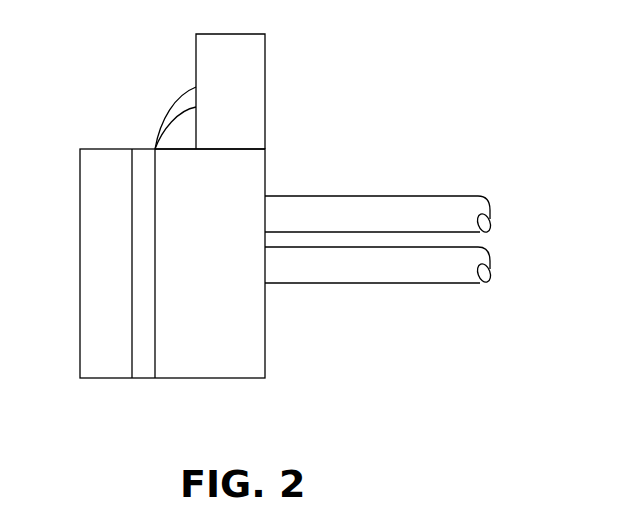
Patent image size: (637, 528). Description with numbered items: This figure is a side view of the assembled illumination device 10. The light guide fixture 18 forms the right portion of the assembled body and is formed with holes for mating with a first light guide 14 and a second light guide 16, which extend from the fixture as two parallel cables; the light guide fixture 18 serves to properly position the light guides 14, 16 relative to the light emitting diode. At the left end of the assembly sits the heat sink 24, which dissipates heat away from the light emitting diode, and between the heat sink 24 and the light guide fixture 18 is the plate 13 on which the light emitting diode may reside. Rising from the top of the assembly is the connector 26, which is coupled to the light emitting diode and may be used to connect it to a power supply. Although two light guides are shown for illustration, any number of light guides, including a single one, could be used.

The illumination device 10 is at (358, 142).
The plate 13 is at (140, 378).
The first light guide 14 is at (393, 195).
The second light guide 16 is at (387, 283).
The light guide fixture 18 is at (218, 378).
The heat sink 24 is at (98, 378).
The connector 26 is at (265, 82).